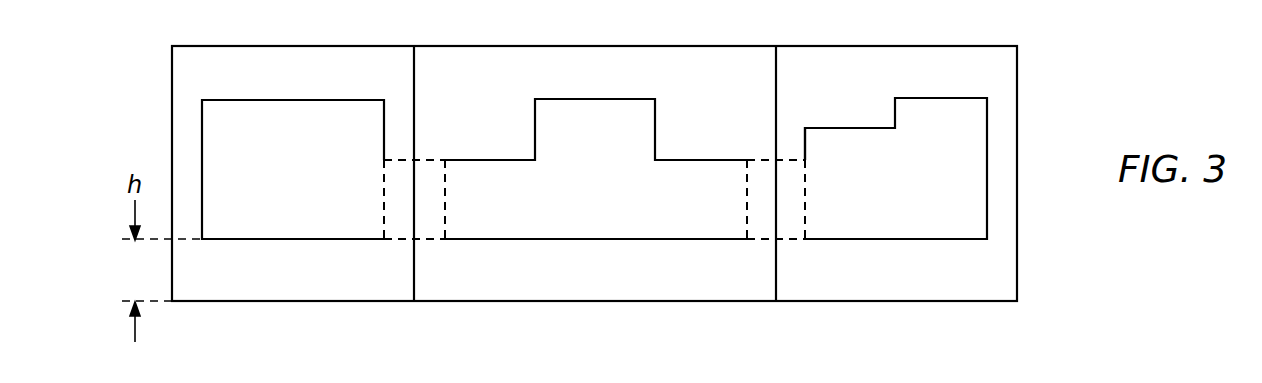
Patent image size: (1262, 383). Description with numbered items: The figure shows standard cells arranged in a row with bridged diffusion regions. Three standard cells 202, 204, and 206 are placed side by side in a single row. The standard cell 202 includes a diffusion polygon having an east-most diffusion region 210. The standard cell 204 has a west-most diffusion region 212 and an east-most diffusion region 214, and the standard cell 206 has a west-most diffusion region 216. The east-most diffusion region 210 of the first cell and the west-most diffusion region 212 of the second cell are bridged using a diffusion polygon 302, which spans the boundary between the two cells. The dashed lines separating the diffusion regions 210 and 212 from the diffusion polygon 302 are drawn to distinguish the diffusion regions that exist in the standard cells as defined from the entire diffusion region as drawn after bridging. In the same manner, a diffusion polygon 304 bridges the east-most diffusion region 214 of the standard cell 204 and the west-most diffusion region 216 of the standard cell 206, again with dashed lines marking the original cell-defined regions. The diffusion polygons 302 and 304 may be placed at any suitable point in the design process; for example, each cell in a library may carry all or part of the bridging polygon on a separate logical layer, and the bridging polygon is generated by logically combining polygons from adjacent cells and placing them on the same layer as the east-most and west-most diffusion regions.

The standard cell 202 is at (218, 303).
The standard cell 204 is at (692, 302).
The standard cell 206 is at (918, 301).
The east-most diffusion region 210 is at (374, 239).
The west-most diffusion region 212 is at (460, 159).
The east-most diffusion region 214 is at (730, 159).
The west-most diffusion region 216 is at (822, 128).
The diffusion polygon 302 is at (428, 239).
The diffusion polygon 304 is at (788, 238).